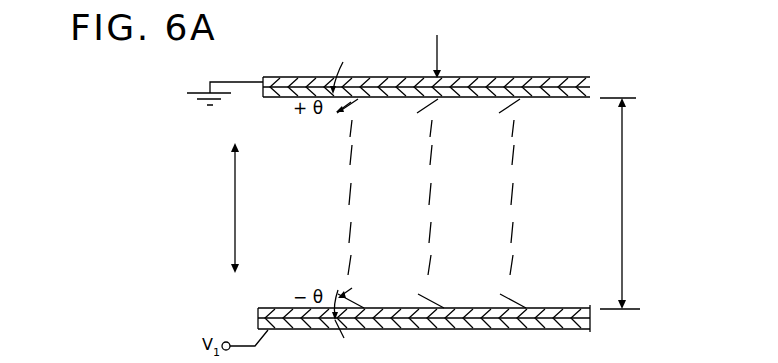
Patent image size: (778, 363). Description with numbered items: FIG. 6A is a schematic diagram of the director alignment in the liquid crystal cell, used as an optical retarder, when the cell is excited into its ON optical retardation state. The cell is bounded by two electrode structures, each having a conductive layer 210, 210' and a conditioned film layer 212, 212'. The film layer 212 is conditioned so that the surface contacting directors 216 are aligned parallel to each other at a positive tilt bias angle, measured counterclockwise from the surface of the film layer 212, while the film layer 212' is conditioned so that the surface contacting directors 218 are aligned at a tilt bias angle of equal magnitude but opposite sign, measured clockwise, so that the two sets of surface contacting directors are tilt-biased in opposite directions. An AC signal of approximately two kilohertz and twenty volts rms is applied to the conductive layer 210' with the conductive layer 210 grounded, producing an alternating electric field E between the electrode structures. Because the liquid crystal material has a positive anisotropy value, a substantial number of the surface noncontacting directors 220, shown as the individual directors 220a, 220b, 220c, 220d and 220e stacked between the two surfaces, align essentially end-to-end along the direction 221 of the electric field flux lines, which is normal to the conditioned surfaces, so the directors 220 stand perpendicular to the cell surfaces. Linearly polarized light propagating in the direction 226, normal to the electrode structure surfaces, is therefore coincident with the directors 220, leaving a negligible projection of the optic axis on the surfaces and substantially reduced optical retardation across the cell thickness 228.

The conductive layer 210 is at (388, 67).
The conductive layer 210' is at (389, 316).
The film layer 212 is at (288, 95).
The film layer 212' is at (303, 302).
The surface contacting directors 216 is at (527, 106).
The surface contacting directors 218 is at (526, 296).
The surface noncontacting directors 220 is at (336, 173).
The dipole element 220a is at (522, 129).
The dipole element 220b is at (522, 155).
The dipole element 220c is at (521, 267).
The dipole element 220d is at (521, 235).
The dipole element 220e is at (521, 195).
The direction of the electric field flux lines 221 is at (237, 207).
The direction of light propagation 226 is at (437, 42).
The thickness 228 is at (630, 203).